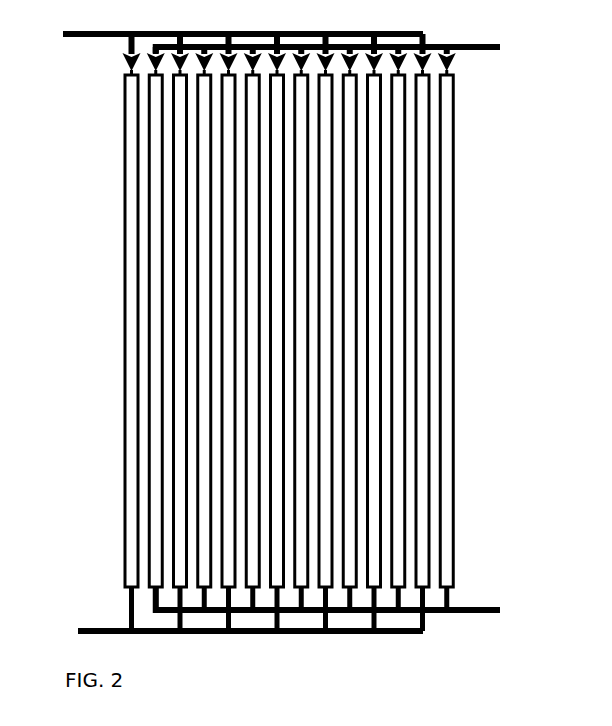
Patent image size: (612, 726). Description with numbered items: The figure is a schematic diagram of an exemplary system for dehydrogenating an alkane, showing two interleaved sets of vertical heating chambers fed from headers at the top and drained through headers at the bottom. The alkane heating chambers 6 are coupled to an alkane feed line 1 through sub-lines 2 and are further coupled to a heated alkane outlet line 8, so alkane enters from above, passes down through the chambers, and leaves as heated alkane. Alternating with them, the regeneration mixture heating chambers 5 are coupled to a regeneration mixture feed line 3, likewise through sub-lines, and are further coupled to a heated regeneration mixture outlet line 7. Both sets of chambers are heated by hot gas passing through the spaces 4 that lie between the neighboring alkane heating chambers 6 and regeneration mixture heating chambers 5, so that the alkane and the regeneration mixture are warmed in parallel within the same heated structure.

The alkane feed line 1 is at (80, 38).
The sub-lines 2 is at (128, 50).
The regeneration mixture feed line 3 is at (470, 50).
The spaces 4 is at (190, 407).
The regeneration mixture heating chambers 5 is at (156, 498).
The alkane heating chambers 6 is at (133, 556).
The heated regeneration mixture outlet line 7 is at (474, 606).
The heated alkane outlet line 8 is at (100, 626).